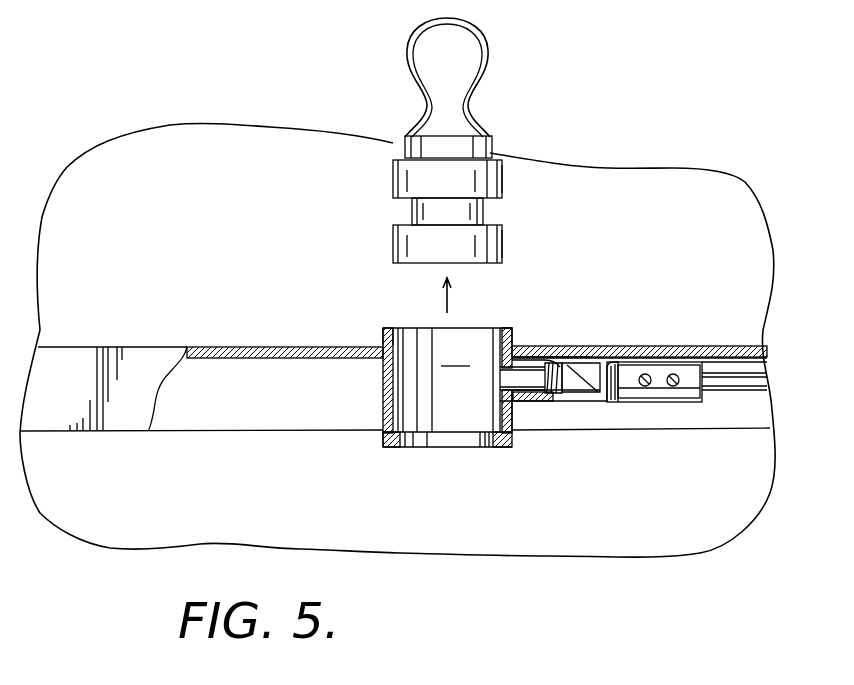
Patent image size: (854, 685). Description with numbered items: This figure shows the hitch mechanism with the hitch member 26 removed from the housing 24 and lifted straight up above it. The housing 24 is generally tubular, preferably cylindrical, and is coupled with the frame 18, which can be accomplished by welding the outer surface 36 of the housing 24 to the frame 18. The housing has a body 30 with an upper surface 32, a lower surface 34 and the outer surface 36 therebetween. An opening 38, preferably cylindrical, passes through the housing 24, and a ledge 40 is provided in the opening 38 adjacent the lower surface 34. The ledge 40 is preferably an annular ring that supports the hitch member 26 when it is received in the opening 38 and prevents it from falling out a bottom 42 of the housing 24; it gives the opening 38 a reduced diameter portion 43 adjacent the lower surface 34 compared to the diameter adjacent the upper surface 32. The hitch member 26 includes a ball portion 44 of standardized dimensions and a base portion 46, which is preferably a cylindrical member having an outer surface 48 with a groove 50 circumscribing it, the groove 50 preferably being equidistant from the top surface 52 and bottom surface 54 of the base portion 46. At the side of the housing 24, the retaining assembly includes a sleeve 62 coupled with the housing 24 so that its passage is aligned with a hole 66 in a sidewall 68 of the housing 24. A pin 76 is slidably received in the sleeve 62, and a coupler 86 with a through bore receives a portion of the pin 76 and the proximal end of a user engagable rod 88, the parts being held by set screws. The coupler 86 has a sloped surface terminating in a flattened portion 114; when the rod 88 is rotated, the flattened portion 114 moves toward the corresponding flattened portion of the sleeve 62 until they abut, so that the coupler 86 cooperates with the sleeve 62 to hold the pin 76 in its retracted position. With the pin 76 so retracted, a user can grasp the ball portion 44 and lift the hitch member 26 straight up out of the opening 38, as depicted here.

The frame 18 is at (156, 347).
The housing 24 is at (515, 327).
The hitch member 26 is at (420, 43).
The body 30 is at (386, 398).
The upper surface 32 is at (386, 327).
The lower surface 34 is at (396, 449).
The outer surface 36 is at (513, 424).
The opening 38 is at (456, 352).
The ledge 40 is at (497, 434).
The bottom 42 is at (500, 448).
The reduced diameter portion 43 is at (488, 448).
The ball portion 44 is at (486, 78).
The base portion 46 is at (392, 175).
The outer surface 48 is at (503, 182).
The groove 50 is at (397, 220).
The top surface 52 is at (404, 148).
The bottom surface 54 is at (398, 264).
The sleeve 62 is at (580, 368).
The hole 66 is at (500, 370).
The sidewall 68 is at (513, 407).
The pin 76 is at (555, 358).
The coupler 86 is at (652, 393).
The user engagable rod 88 is at (738, 390).
The flattened portion 114 is at (608, 362).